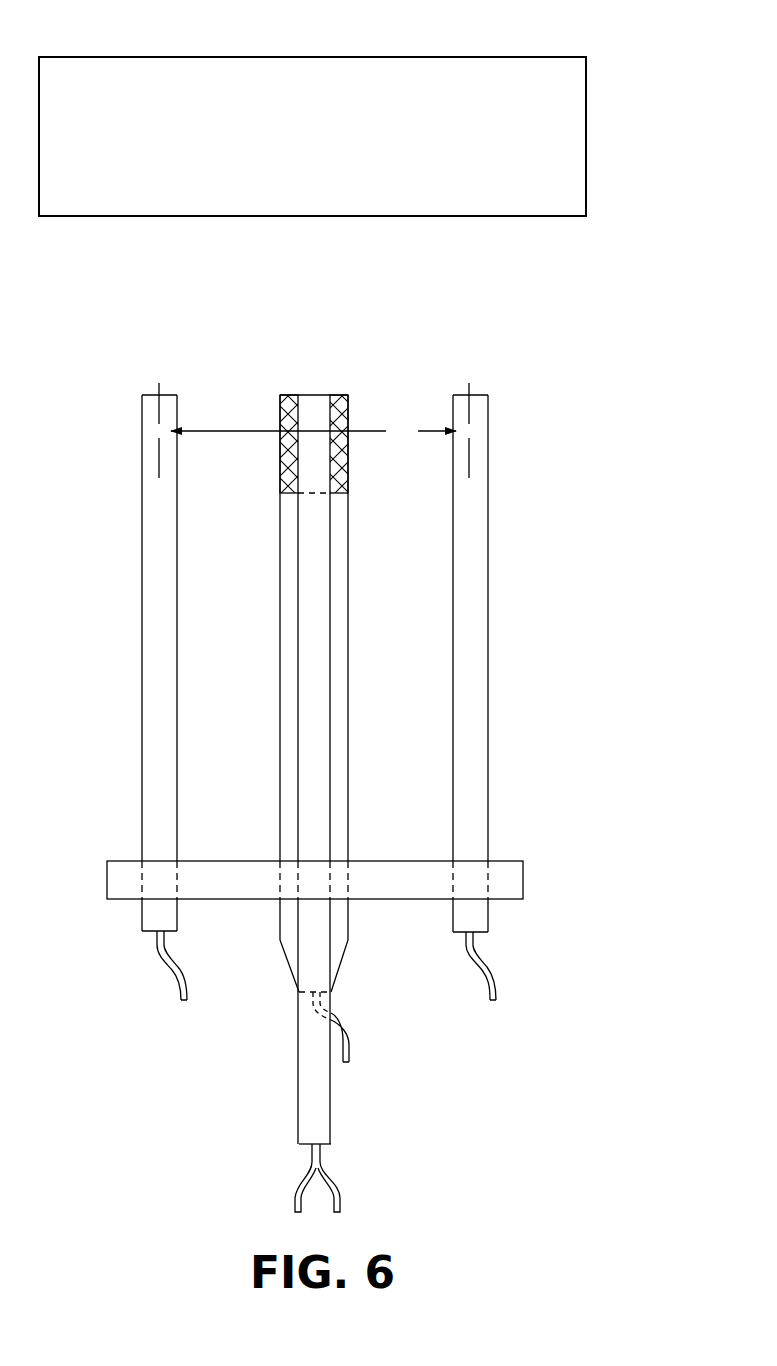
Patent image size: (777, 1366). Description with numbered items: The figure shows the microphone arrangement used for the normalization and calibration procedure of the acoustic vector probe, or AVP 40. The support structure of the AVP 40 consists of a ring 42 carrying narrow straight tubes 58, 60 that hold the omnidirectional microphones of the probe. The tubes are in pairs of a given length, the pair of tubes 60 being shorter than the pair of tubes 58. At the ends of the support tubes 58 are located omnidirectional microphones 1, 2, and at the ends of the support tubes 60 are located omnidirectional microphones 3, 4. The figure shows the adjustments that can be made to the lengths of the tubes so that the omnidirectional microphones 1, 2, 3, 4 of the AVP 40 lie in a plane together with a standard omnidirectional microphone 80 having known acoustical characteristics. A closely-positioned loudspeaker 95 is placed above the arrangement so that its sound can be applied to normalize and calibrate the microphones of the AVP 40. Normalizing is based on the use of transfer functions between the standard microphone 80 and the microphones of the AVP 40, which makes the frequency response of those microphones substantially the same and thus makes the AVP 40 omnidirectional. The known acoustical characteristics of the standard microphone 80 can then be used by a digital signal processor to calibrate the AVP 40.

The loudspeaker 95 is at (128, 57).
The AVP 40 is at (518, 472).
The omnidirectional microphone 3 is at (150, 393).
The omnidirectional microphone 4 is at (473, 393).
The support tubes 60 is at (150, 649).
The support tubes 58 is at (305, 620).
The standard omnidirectional microphone 80 is at (285, 395).
The omnidirectional microphone 1 is at (353, 747).
The omnidirectional microphone 2 is at (316, 395).
The ring 42 is at (120, 860).